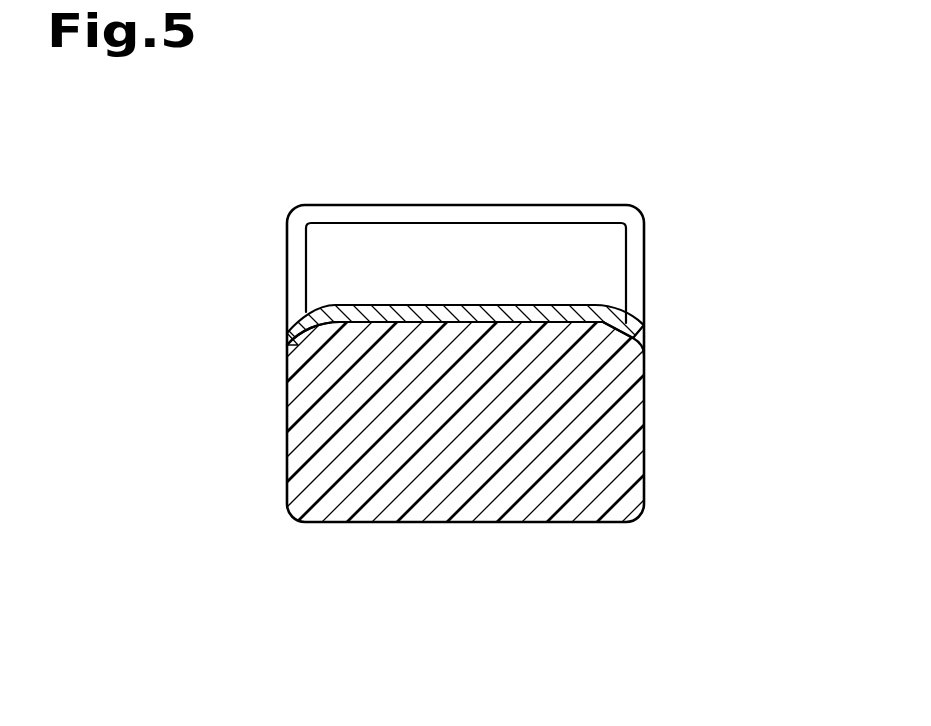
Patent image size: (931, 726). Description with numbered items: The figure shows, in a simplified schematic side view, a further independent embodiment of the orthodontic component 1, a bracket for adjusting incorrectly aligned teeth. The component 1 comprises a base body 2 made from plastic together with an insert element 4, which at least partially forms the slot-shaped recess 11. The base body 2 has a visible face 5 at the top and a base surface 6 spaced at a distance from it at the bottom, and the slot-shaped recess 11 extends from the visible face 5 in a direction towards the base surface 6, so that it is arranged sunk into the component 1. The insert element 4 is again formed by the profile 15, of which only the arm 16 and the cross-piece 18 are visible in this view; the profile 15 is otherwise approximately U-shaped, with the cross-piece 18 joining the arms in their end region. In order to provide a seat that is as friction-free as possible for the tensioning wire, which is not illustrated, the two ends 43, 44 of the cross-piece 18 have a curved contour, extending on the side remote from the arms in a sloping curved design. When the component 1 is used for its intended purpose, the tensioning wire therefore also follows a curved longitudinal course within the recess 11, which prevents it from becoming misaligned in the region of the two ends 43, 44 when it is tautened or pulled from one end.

The orthodontic component 1 is at (718, 250).
The base body 2 is at (558, 452).
The insert element 4 is at (605, 233).
The visible face 5 is at (494, 198).
The base surface 6 is at (472, 528).
The slot-shaped recess 11 is at (425, 262).
The profile 15 is at (359, 255).
The arm 16 is at (509, 263).
The cross-piece 18 is at (470, 312).
The end of cross-piece 43 is at (290, 333).
The end of cross-piece 44 is at (643, 335).